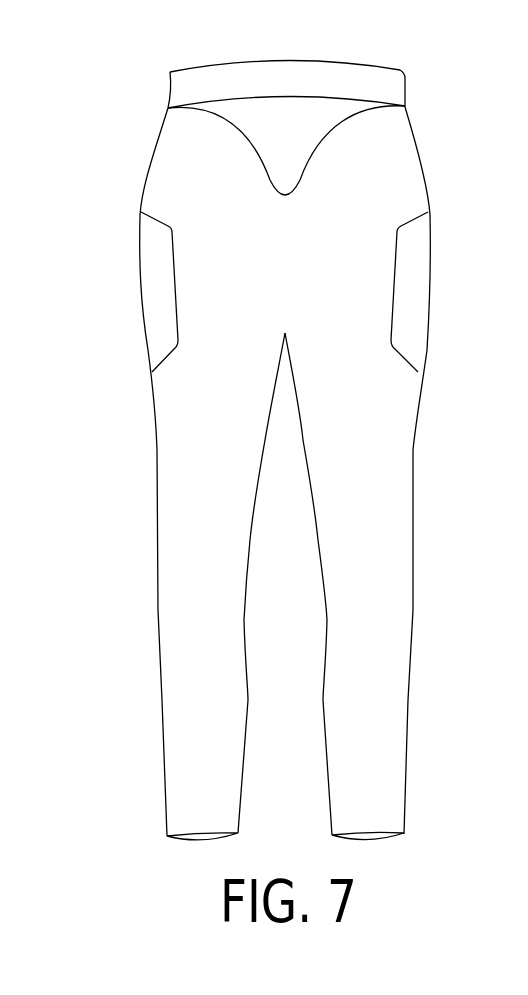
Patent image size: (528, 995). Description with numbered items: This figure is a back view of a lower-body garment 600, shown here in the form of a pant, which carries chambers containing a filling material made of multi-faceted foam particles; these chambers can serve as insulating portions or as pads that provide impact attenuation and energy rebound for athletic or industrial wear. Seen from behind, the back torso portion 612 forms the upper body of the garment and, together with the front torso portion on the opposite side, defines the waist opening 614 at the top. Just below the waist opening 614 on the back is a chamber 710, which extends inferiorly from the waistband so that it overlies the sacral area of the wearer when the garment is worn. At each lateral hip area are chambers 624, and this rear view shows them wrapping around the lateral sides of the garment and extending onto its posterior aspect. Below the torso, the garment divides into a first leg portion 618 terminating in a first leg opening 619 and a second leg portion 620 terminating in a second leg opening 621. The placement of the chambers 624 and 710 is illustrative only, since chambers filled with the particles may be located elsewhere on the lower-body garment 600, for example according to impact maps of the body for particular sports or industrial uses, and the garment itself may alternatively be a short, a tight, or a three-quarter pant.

The lower-body garment 600 is at (57, 91).
The waist opening 614 is at (283, 44).
The chamber 710 is at (305, 122).
The back torso portion 612 is at (175, 152).
The chambers 624 is at (158, 303).
The second leg portion 620 is at (178, 425).
The first leg portion 618 is at (390, 425).
The second leg opening 621 is at (197, 842).
The first leg opening 619 is at (373, 842).